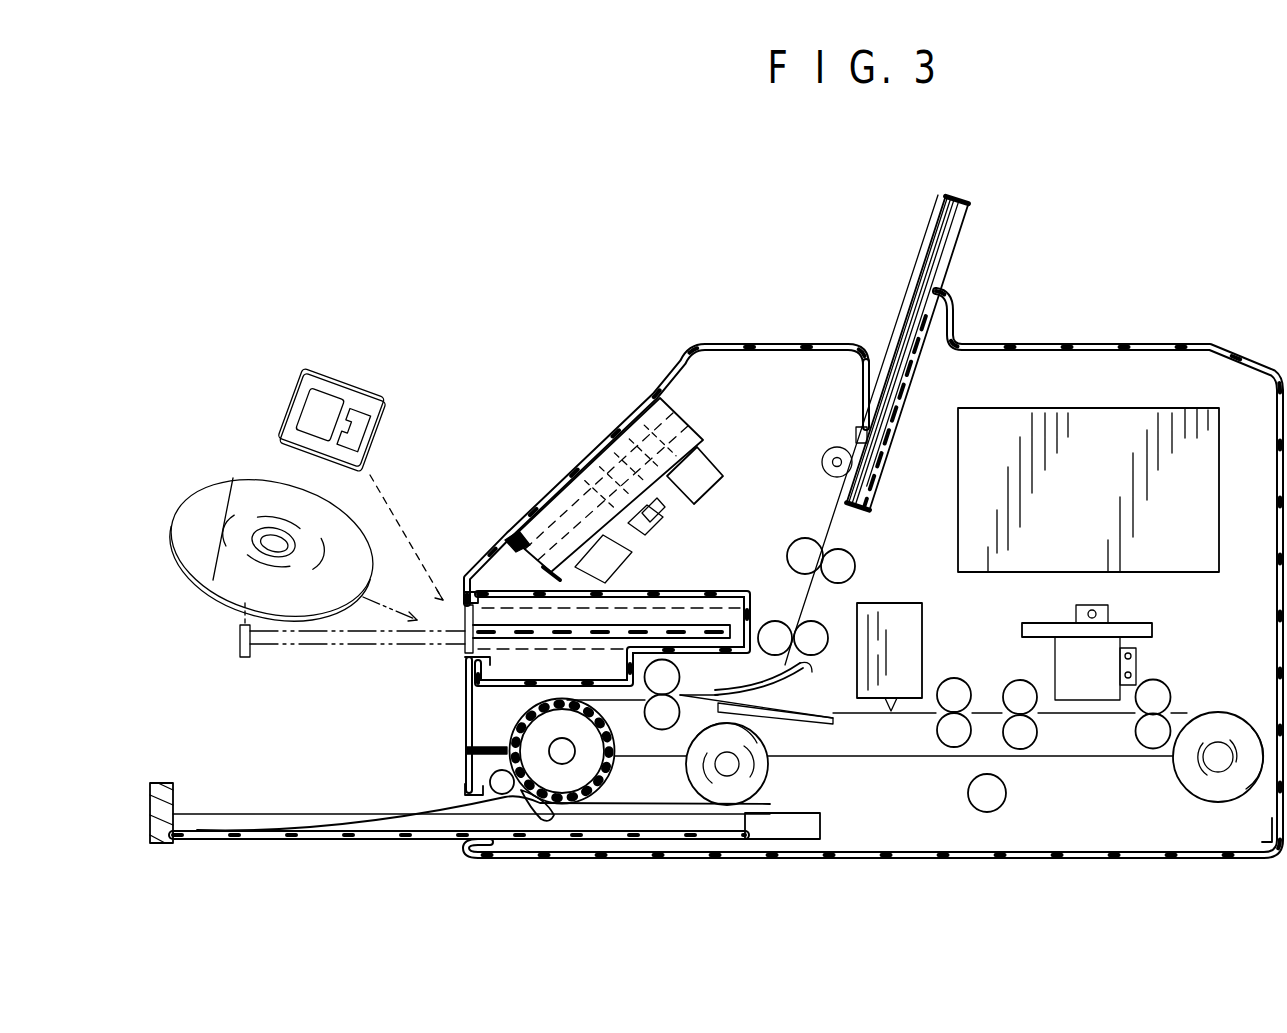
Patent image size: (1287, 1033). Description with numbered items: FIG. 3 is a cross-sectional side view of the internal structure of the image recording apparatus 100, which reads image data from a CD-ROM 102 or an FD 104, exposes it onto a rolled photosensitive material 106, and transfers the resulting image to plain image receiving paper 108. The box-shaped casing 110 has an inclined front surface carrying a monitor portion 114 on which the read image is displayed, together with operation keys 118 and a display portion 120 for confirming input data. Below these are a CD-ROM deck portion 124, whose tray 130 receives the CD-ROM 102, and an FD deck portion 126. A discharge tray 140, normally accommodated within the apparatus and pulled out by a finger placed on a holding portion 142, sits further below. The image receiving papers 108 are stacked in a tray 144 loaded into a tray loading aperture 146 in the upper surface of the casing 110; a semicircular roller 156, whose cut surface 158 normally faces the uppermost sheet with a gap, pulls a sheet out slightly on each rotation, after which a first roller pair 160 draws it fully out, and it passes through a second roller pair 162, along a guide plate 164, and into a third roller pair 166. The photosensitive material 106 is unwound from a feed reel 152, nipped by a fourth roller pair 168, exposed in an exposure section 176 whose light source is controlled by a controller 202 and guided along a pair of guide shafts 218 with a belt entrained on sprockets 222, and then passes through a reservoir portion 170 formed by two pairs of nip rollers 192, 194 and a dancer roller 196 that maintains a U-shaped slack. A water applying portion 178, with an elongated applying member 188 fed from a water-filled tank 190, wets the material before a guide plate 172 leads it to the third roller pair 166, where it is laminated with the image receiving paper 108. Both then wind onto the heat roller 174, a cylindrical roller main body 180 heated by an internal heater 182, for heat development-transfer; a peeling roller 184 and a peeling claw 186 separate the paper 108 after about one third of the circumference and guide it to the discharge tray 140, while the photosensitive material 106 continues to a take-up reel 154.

The image recording apparatus 100 is at (652, 306).
The CD-ROM 102 is at (233, 478).
The FD 104 is at (370, 388).
The photosensitive material 106 is at (1183, 713).
The image receiving paper 108 is at (927, 242).
The casing 110 is at (782, 345).
The monitor portion 114 is at (642, 417).
The operation keys 118 is at (632, 570).
The display portion 120 is at (710, 462).
The CD-ROM deck portion 124 is at (462, 660).
The FD deck portion 126 is at (510, 605).
The tray 130 is at (457, 633).
The discharge tray 140 is at (288, 843).
The holding portion 142 is at (178, 812).
The tray 144 is at (972, 226).
The tray loading aperture 146 is at (870, 358).
The feed reel 152 is at (1217, 773).
The take-up reel 154 is at (728, 767).
The semicircular roller 156 is at (830, 446).
The cut surface 158 is at (822, 480).
The first roller pair 160 is at (858, 565).
The second roller pair 162 is at (828, 623).
The guide plate 164 is at (803, 663).
The third roller pair 166 is at (688, 648).
The fourth roller pair 168 is at (1160, 682).
The reservoir portion 170 is at (987, 822).
The guide plate 172 is at (826, 725).
The heat roller 174 is at (618, 790).
The exposure section 176 is at (1126, 618).
The water applying portion 178 is at (925, 633).
The roller main body 180 is at (573, 800).
The heater 182 is at (556, 752).
The peeling roller 184 is at (496, 776).
The peeling claw 186 is at (530, 817).
The applying member 188 is at (895, 712).
The tank 190 is at (905, 665).
The nip rollers 192 is at (1028, 735).
The nip rollers 194 is at (950, 742).
The dancer roller 196 is at (1000, 805).
The controller 202 is at (1066, 410).
The guide shafts 218 is at (1120, 677).
The sprockets 222 is at (1082, 605).